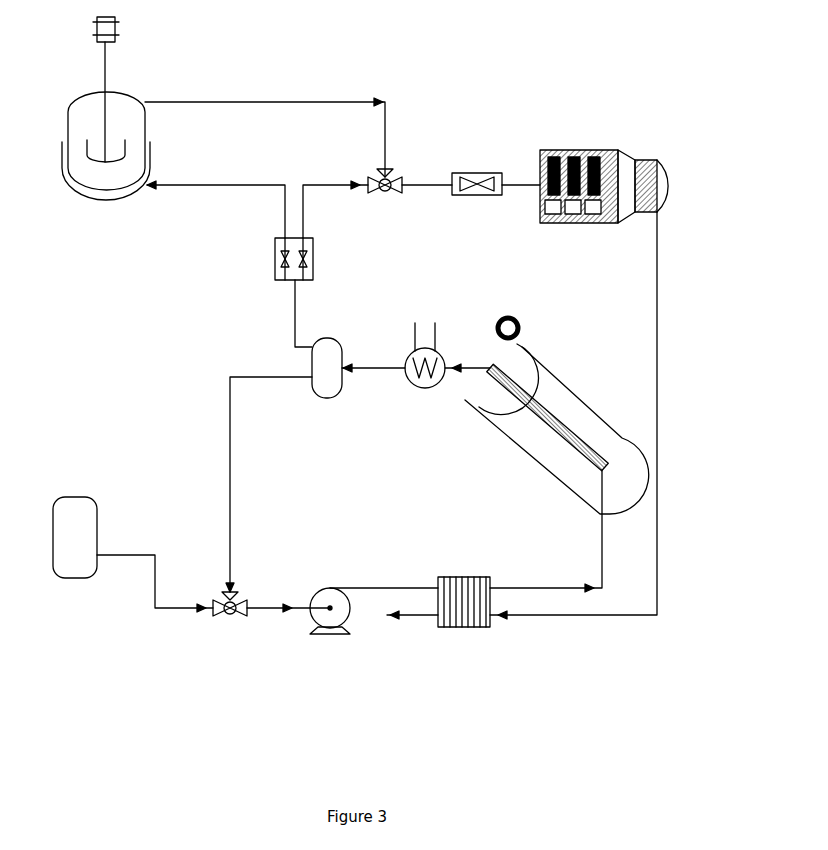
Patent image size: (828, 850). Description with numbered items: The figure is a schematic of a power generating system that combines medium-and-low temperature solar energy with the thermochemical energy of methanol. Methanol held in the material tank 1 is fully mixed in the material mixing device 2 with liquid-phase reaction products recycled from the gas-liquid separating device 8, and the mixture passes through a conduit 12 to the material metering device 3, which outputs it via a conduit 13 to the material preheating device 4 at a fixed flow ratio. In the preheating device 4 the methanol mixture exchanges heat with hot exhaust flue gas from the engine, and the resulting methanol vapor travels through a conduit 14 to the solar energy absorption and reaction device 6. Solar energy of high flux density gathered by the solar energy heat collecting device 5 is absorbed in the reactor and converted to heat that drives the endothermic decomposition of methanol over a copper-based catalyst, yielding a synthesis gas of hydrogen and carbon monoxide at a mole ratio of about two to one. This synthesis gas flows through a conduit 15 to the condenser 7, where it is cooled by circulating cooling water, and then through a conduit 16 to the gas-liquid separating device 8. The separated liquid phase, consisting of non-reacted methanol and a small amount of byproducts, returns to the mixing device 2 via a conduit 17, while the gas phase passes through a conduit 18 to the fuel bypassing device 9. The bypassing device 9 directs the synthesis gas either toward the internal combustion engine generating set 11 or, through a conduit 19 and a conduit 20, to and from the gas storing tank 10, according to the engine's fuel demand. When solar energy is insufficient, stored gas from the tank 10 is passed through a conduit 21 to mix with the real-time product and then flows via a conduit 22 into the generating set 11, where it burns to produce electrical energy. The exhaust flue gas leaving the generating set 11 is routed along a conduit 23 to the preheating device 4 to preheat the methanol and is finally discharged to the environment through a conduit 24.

The material tank 1 is at (73, 495).
The material mixing device 2 is at (225, 595).
The material metering device 3 is at (333, 635).
The material preheating device 4 is at (452, 577).
The solar energy heat collecting device 5 is at (532, 427).
The solar energy absorption and reaction device 6 is at (588, 408).
The condenser 7 is at (432, 392).
The gas-liquid separating device 8 is at (342, 353).
The fuel bypassing device 9 is at (315, 262).
The gas storing tank 10 is at (72, 105).
The power generating apparatus 11 is at (553, 148).
The conduit 12 is at (270, 612).
The conduit 13 is at (405, 585).
The conduit 14 is at (553, 585).
The conduit 15 is at (473, 366).
The conduit 16 is at (390, 366).
The conduit 17 is at (227, 492).
The conduit 18 is at (293, 320).
The pipeline 19 is at (330, 182).
The pipeline 20 is at (215, 180).
The conduit 21 is at (278, 98).
The conduit 22 is at (428, 180).
The pipeline 23 is at (658, 398).
The conduit 24 is at (408, 617).